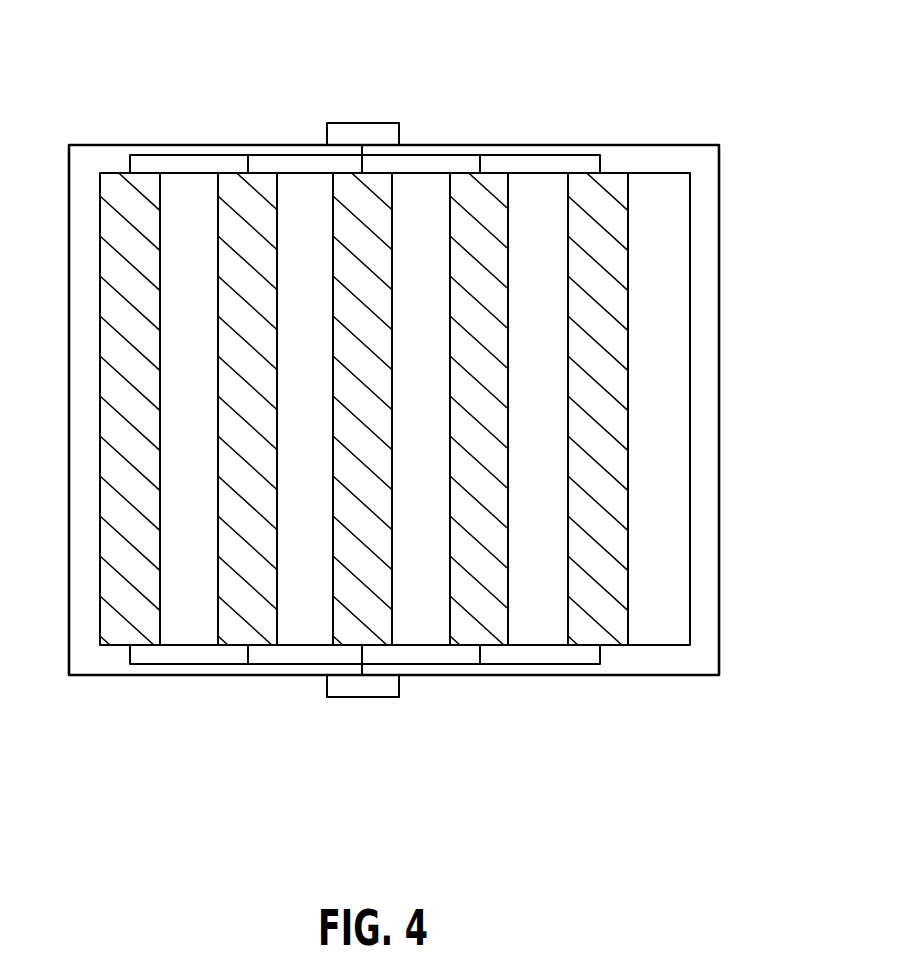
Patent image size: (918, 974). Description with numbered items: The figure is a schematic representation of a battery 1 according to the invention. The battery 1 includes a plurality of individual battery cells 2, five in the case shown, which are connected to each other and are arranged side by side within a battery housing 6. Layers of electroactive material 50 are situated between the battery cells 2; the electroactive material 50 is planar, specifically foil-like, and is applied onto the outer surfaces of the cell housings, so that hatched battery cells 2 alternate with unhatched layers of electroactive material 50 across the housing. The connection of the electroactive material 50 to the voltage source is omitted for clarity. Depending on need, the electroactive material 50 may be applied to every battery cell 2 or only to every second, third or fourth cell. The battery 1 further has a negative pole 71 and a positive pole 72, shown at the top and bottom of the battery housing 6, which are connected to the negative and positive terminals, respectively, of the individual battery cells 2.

The battery 1 is at (89, 116).
The battery cell 2 is at (139, 321).
The electroactive material 50 is at (205, 437).
The battery housing 6 is at (720, 215).
The negative pole 71 is at (362, 122).
The positive pole 72 is at (364, 698).